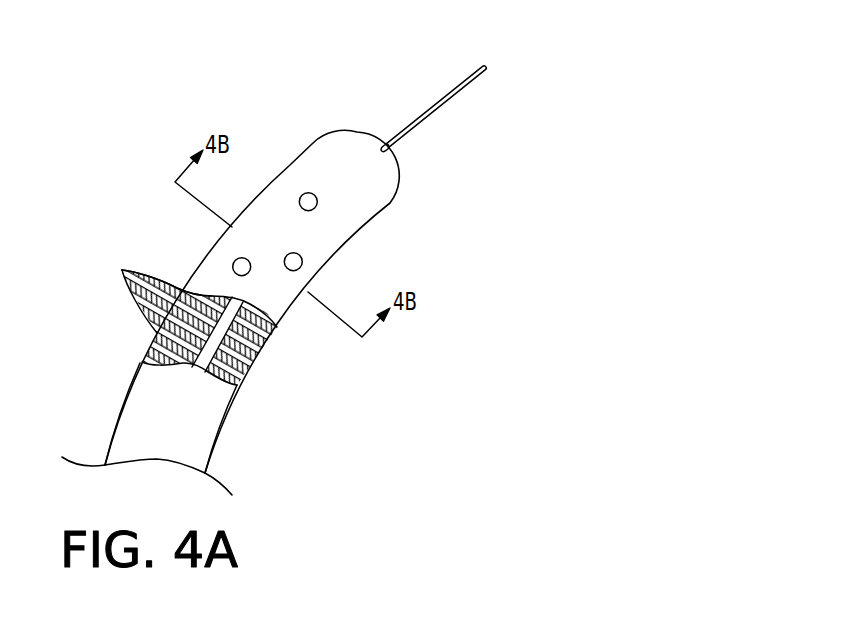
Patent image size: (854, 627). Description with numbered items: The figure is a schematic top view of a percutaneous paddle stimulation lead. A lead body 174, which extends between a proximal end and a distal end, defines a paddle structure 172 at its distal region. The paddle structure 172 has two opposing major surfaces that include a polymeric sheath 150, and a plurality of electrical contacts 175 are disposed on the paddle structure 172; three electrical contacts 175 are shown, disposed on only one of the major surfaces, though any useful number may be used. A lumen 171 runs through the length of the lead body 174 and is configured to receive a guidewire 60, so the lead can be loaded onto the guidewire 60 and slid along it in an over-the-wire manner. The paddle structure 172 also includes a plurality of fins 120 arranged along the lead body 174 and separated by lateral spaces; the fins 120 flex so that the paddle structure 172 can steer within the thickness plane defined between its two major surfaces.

The guidewire 60 is at (484, 66).
The fins 120 is at (147, 293).
The polymeric sheath 150 is at (210, 412).
The lumen 171 is at (222, 322).
The paddle structure 172 is at (300, 157).
The lead body 174 is at (92, 400).
The electrical contacts 175 is at (317, 200).